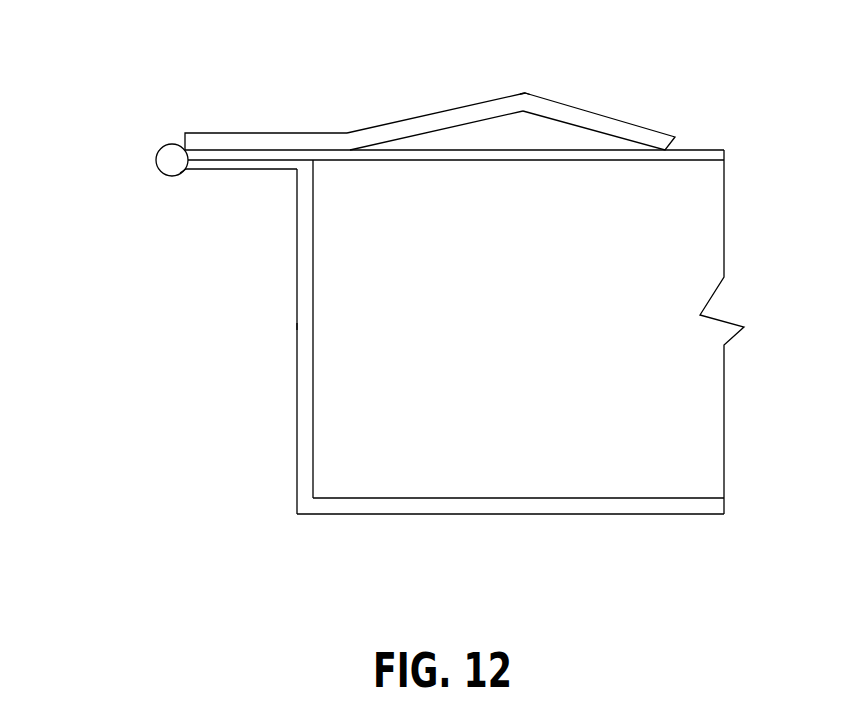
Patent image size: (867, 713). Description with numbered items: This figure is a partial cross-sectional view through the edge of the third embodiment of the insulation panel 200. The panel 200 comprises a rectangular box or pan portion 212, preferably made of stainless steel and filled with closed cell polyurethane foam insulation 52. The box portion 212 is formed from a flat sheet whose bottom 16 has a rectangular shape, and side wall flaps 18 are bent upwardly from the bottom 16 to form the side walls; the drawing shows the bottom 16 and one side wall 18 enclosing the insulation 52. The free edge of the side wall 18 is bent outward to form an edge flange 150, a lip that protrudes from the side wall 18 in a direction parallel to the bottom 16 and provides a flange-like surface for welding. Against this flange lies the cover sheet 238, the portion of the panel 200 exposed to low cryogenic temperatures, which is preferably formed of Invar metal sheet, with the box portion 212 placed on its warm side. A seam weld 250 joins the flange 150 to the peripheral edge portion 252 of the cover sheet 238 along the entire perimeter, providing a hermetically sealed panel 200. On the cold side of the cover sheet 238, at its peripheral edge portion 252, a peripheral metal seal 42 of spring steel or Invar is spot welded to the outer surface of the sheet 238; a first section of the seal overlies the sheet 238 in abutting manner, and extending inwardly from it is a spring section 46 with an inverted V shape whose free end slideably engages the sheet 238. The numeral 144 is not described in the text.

The bottom portion 16 is at (348, 504).
The side wall flap 18 is at (297, 425).
The insulation 52 is at (688, 230).
The cover sheet 238 is at (697, 150).
The flange plate 144 is at (276, 133).
The spring section 46 is at (453, 107).
The peripheral metal seal 42 is at (614, 106).
The insulation panel 200 is at (548, 86).
The seam weld 250 is at (156, 160).
The peripheral edge portion 252 is at (172, 176).
The edge flange 150 is at (248, 170).
The box portion 212 is at (278, 330).